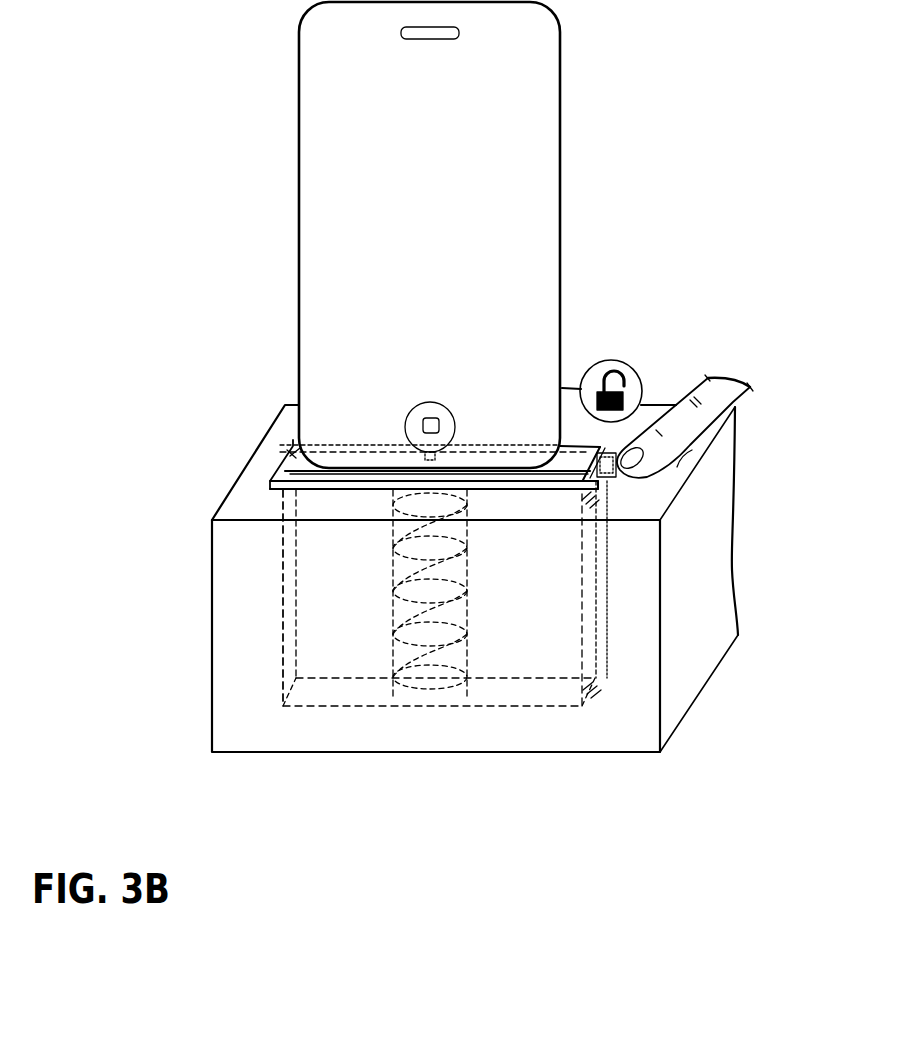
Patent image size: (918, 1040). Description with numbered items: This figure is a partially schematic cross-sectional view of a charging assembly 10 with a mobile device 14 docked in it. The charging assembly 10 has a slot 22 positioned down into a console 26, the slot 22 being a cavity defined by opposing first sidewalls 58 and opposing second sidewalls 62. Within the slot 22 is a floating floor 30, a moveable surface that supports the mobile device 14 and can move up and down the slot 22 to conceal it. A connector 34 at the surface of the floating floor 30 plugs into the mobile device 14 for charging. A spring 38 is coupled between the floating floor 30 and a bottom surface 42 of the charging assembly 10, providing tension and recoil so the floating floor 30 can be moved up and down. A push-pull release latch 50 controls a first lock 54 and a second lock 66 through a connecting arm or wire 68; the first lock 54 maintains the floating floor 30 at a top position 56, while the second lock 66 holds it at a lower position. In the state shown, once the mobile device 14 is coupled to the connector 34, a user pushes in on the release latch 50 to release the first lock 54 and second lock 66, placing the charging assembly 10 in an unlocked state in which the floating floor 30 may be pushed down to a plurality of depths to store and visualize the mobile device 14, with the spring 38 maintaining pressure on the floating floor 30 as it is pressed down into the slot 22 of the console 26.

The charging assembly 10 is at (219, 386).
The mobile device 14 is at (532, 57).
The slot 22 is at (312, 619).
The console 26 is at (679, 466).
The floating floor 30 is at (563, 462).
The connector 34 is at (430, 447).
The spring 38 is at (415, 617).
The bottom surface 42 is at (487, 688).
The push-pull release latch 50 is at (608, 455).
The first lock 54 is at (607, 503).
The top position 56 is at (286, 457).
The first sidewalls 58 is at (303, 567).
The second sidewalls 62 is at (283, 553).
The second lock 66 is at (593, 683).
The connecting arm or wire 68 is at (610, 580).